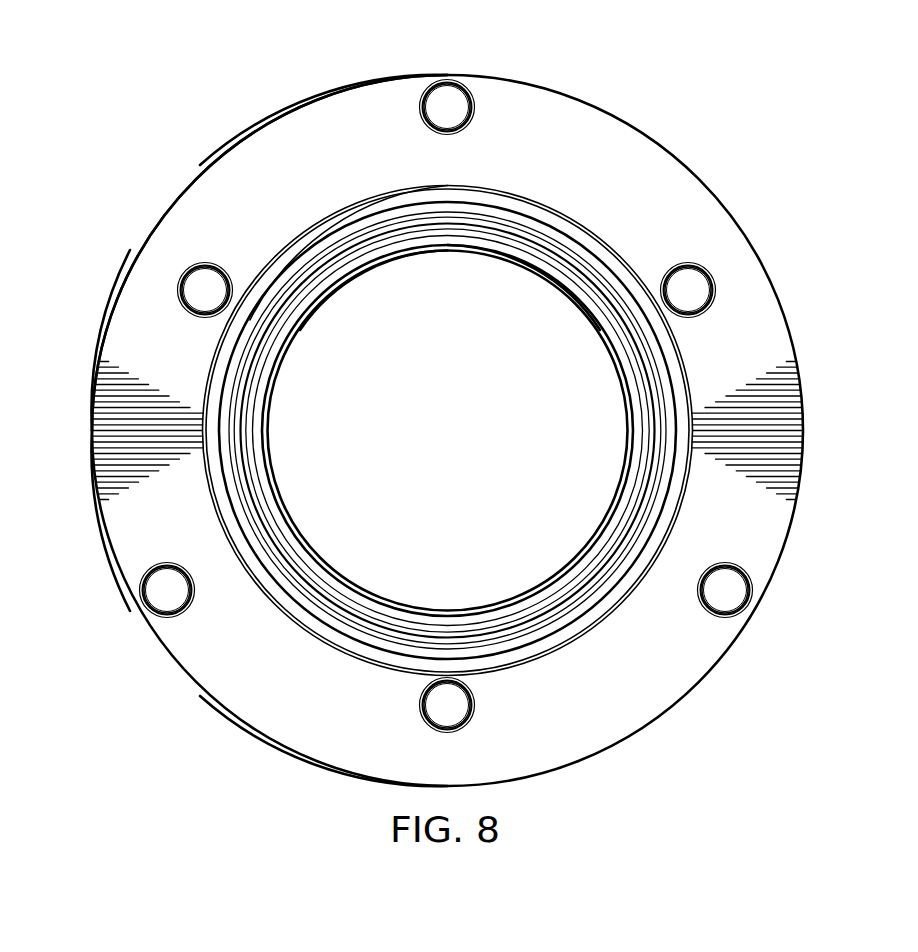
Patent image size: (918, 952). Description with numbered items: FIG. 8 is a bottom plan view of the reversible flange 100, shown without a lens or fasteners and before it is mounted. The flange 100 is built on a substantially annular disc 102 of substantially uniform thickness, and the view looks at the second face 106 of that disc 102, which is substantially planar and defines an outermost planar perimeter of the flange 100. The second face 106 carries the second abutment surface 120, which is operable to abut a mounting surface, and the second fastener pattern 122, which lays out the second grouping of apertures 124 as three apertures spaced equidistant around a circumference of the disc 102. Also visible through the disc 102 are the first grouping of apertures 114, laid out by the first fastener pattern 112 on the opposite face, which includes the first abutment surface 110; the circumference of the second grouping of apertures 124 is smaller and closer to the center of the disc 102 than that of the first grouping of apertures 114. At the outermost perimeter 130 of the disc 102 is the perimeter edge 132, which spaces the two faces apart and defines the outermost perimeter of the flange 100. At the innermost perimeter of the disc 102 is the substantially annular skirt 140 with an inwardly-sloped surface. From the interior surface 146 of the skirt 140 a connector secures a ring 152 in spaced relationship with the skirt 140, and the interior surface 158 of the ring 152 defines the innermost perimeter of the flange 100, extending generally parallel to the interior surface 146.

The reversible flange 100 is at (724, 113).
The annular disc 102 is at (156, 222).
The second face 106 is at (275, 123).
The first abutment surface 110 is at (273, 732).
The first fastener pattern 112 is at (455, 117).
The first grouping of apertures 114 is at (438, 122).
The second abutment surface 120 is at (113, 322).
The second fastener pattern 122 is at (197, 300).
The second grouping of apertures 124 is at (210, 277).
The outermost perimeter 130 is at (88, 430).
The perimeter edge 132 is at (108, 545).
The skirt 140 is at (540, 193).
The interior surface of the skirt 146 is at (337, 223).
The ring 152 is at (402, 260).
The interior surface of the ring 158 is at (528, 263).